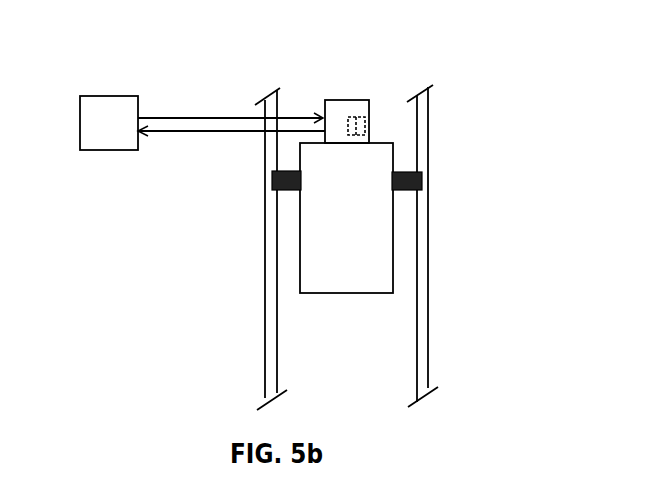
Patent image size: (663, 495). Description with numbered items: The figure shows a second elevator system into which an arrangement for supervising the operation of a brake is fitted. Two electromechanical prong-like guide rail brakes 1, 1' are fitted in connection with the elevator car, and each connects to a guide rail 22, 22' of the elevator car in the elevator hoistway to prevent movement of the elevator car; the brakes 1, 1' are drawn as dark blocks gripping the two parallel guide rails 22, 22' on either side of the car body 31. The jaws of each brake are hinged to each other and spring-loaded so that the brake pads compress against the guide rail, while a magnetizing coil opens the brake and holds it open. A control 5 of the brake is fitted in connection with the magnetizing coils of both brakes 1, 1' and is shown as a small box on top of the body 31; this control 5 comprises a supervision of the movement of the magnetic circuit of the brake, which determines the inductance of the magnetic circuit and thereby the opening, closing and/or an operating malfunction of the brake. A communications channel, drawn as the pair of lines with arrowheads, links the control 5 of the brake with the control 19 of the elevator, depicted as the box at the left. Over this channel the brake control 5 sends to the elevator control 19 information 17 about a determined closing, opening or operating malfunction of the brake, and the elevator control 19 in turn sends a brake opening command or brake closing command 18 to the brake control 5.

The guide rail brake 1 is at (260, 191).
The guide rail brake 1' is at (432, 169).
The control of the brake 5 is at (350, 99).
The information 17 is at (197, 132).
The brake opening command or brake closing command 18 is at (193, 116).
The control of the elevator 19 is at (100, 95).
The guide rail 22 is at (236, 249).
The guide rail 22' is at (462, 246).
The body 31 is at (345, 294).